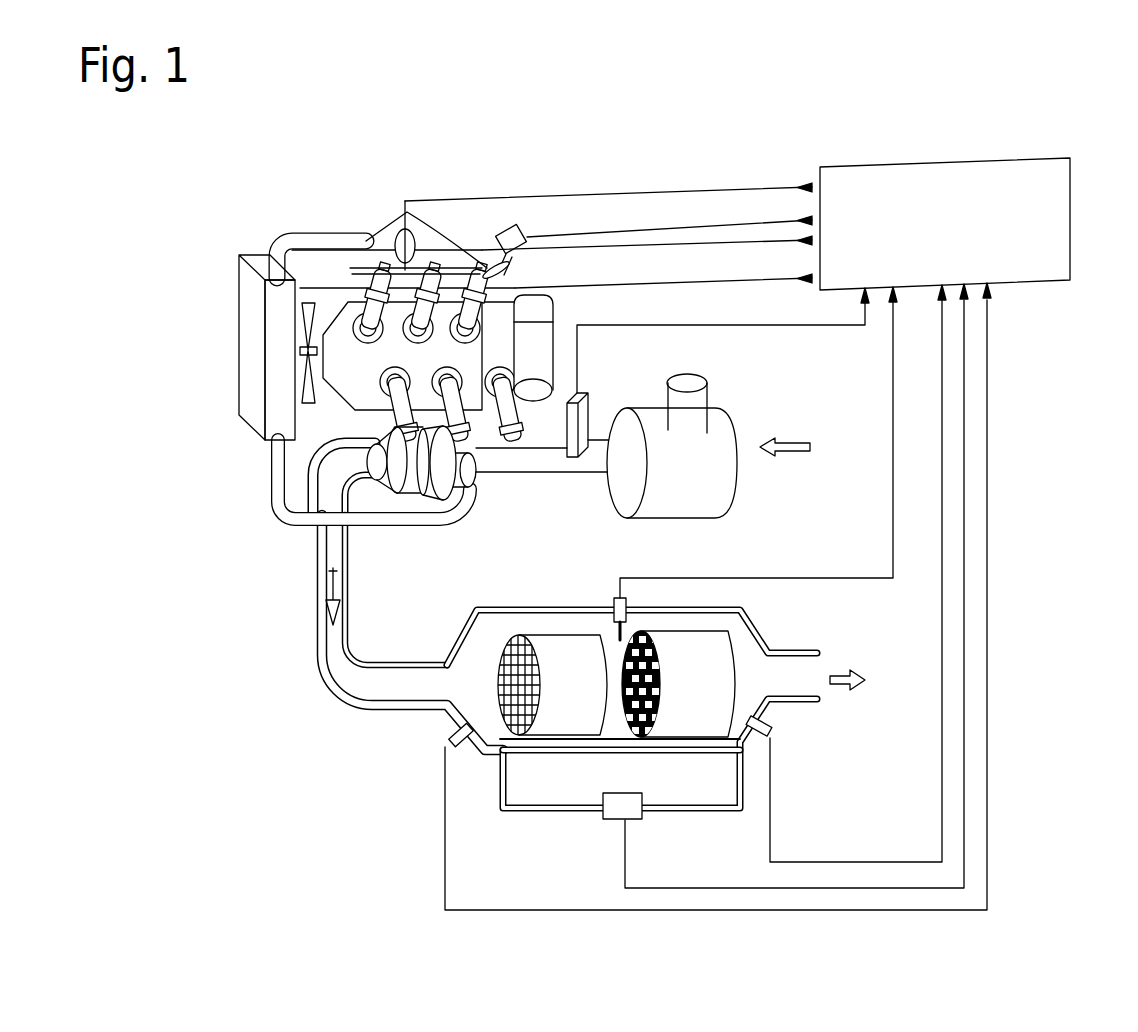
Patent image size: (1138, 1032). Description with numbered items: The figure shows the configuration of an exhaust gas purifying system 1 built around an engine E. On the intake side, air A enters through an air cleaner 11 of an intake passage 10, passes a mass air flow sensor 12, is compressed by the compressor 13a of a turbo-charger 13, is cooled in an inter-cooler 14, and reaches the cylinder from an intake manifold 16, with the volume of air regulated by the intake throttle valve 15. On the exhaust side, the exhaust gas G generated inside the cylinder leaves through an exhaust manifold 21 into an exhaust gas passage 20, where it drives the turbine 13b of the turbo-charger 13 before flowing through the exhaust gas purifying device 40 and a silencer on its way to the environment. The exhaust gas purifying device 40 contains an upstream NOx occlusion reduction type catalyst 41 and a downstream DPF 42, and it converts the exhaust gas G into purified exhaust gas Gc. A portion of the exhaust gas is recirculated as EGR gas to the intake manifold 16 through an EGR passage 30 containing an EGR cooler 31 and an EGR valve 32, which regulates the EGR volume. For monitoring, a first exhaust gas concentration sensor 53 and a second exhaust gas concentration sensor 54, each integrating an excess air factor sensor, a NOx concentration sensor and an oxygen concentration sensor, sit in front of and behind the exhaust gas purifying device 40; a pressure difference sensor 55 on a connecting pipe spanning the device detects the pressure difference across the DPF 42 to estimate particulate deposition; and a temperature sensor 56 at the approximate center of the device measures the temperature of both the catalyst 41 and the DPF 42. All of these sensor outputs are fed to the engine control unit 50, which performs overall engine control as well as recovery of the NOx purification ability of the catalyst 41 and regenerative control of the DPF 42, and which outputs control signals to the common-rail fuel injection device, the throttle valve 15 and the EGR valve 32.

The exhaust gas purifying system 1 is at (829, 160).
The engine E is at (272, 232).
The intake passage 10 is at (268, 497).
The air cleaner 11 is at (713, 410).
The mass air flow (MAF) sensor 12 is at (584, 400).
The turbo-charger 13 is at (450, 519).
The compressor 13a is at (470, 478).
The turbine 13b is at (413, 488).
The inter-cooler 14 is at (240, 386).
The throttle valve 15 is at (387, 252).
The intake manifold 16 is at (377, 278).
The exhaust gas passage 20 is at (323, 683).
The exhaust manifold 21 is at (303, 532).
The EGR passage 30 is at (545, 325).
The EGR cooler 31 is at (557, 320).
The EGR valve 32 is at (512, 228).
The exhaust gas purifying device 40 is at (492, 762).
The NOx occlusion reduction type catalyst 41 is at (573, 648).
The DPF 42 is at (712, 648).
The engine control unit (ECU) 50 is at (1071, 190).
The first exhaust gas concentration sensor 53 is at (450, 742).
The second exhaust gas concentration sensor 54 is at (770, 730).
The pressure difference sensor 55 is at (643, 815).
The temperature sensor 56 is at (627, 606).
The exhaust gas G is at (317, 585).
The purified exhaust gas Gc is at (865, 666).
The air A is at (788, 432).